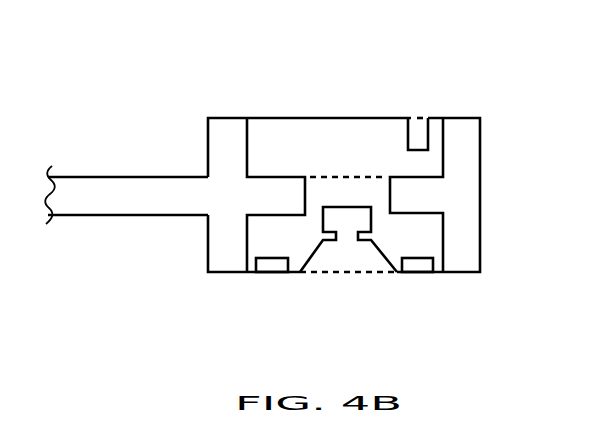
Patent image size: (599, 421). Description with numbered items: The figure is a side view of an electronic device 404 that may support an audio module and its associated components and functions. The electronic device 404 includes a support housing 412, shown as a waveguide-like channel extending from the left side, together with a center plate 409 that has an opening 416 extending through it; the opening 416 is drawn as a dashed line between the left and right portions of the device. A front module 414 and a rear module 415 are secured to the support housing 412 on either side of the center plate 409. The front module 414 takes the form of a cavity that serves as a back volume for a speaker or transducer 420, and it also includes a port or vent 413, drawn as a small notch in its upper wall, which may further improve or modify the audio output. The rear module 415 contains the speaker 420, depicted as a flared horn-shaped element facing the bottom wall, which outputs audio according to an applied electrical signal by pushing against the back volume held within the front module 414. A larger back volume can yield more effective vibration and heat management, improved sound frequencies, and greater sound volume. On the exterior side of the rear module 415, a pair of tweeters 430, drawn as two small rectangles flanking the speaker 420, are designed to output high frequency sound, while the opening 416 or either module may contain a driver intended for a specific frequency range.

The electronic device 404 is at (277, 88).
The support housing 412 is at (165, 148).
The front module 414 is at (357, 127).
The port or vent 413 is at (417, 140).
The rear module 415 is at (427, 232).
The opening 416 is at (353, 180).
The center plate 409 is at (288, 205).
The speaker or transducer 420 is at (343, 258).
The tweeters 430 is at (263, 266).